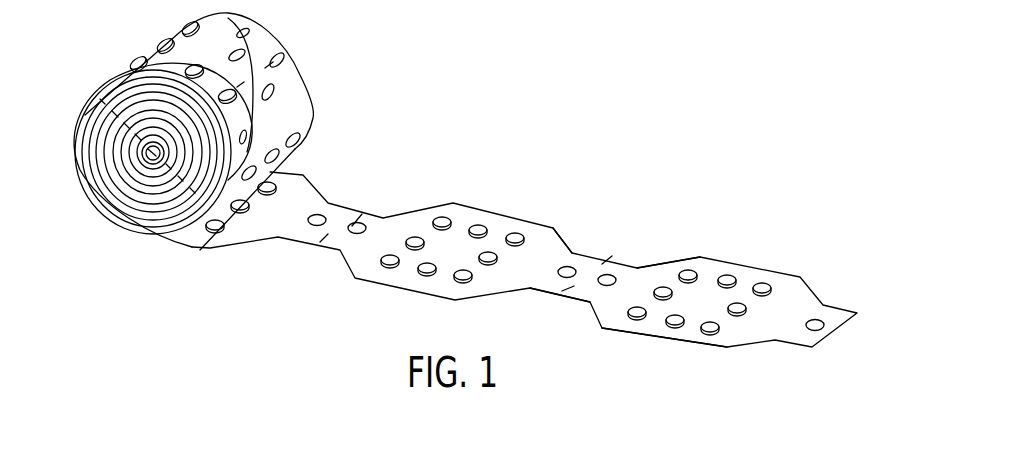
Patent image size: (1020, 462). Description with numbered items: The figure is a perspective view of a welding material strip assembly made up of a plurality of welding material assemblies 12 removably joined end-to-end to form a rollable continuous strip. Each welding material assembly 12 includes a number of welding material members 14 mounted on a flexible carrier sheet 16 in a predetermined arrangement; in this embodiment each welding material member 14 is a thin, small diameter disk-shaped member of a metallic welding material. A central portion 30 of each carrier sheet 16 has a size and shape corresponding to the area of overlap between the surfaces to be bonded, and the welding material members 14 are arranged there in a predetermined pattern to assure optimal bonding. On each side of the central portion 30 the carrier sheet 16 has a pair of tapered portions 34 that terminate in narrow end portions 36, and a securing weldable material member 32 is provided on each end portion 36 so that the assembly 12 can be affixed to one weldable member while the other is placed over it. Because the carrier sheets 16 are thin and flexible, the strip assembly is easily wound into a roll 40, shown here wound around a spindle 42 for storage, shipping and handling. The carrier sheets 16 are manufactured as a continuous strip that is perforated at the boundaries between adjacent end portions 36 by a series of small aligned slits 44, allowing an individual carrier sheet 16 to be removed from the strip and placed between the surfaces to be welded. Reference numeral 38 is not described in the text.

The welding material assembly 12 is at (572, 233).
The welding material member 14 is at (727, 278).
The flexible carrier sheet 16 is at (737, 328).
The central portion 30 is at (697, 298).
The securing weldable material member 32 is at (815, 326).
The tapered portion 34 is at (482, 273).
The narrow end portion 36 is at (555, 285).
The outer wrap 38 is at (350, 158).
The roll 40 is at (238, 131).
The spindle 42 is at (155, 158).
The aligned slits 44 is at (355, 223).